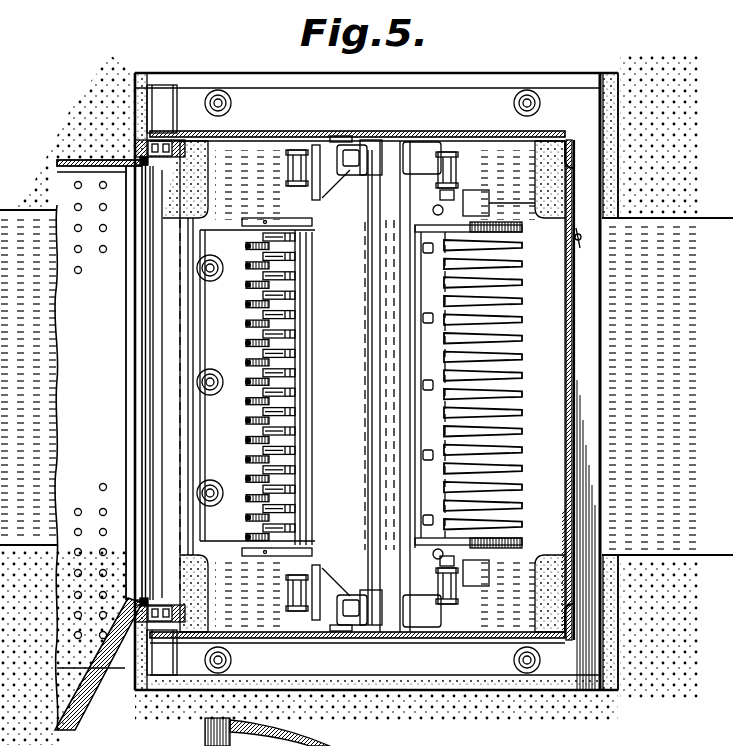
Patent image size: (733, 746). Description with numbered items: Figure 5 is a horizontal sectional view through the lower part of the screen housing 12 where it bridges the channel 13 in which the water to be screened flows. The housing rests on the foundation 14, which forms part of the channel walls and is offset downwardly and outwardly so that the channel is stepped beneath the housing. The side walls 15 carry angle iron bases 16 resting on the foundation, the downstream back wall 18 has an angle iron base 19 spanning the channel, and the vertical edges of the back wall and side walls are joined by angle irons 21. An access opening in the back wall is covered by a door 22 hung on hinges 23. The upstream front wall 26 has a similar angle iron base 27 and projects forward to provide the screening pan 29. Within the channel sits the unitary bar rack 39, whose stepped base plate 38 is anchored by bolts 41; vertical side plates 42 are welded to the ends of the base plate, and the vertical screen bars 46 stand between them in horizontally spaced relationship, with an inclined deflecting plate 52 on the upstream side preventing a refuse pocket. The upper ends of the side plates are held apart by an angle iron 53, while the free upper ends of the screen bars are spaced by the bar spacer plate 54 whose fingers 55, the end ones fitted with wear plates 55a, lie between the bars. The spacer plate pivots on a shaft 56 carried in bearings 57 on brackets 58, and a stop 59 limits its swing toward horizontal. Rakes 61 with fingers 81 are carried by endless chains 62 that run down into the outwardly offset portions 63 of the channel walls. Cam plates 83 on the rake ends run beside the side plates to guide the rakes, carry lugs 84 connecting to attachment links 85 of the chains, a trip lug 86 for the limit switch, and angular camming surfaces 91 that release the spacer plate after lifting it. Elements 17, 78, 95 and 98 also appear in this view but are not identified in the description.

The screen housing 12 is at (448, 130).
The channel 13 is at (668, 550).
The foundation 14 is at (205, 200).
The side walls 15 is at (275, 130).
The angle iron bases 16 is at (268, 90).
The bolts 17 is at (218, 90).
The back wall 18 is at (587, 198).
The angle iron base 19 is at (603, 500).
The angle irons 21 is at (573, 166).
The door 22 is at (577, 342).
The hinges 23 is at (582, 238).
The front wall 26 is at (172, 158).
The angle iron base 27 is at (158, 102).
The screening pan 29 is at (68, 415).
The base plate 38 is at (200, 415).
The bar rack 39 is at (222, 545).
The bolts 41 is at (210, 283).
The side plates 42 is at (232, 236).
The screen bars 46 is at (245, 352).
The deflecting plate 52 is at (240, 452).
The angle iron 53 is at (165, 432).
The bar spacer plate 54 is at (330, 386).
The fingers 55 is at (285, 425).
The wear plates 55a is at (305, 210).
The shaft 56 is at (368, 200).
The bearings 57 is at (356, 168).
The brackets 58 is at (422, 384).
The stop 59 is at (398, 212).
The rakes 61 is at (522, 446).
The endless chains 62 is at (458, 166).
The outwardly offset portions 63 is at (540, 185).
The lever plate 78 is at (312, 200).
The fingers 81 is at (522, 338).
The cam plates 83 is at (500, 222).
The lugs 84 is at (440, 198).
The attachment links 85 is at (470, 194).
The trip lug 86 is at (512, 187).
The angular camming surfaces 91 is at (428, 254).
The guide bar 95 is at (148, 180).
The end bar 98 is at (528, 240).